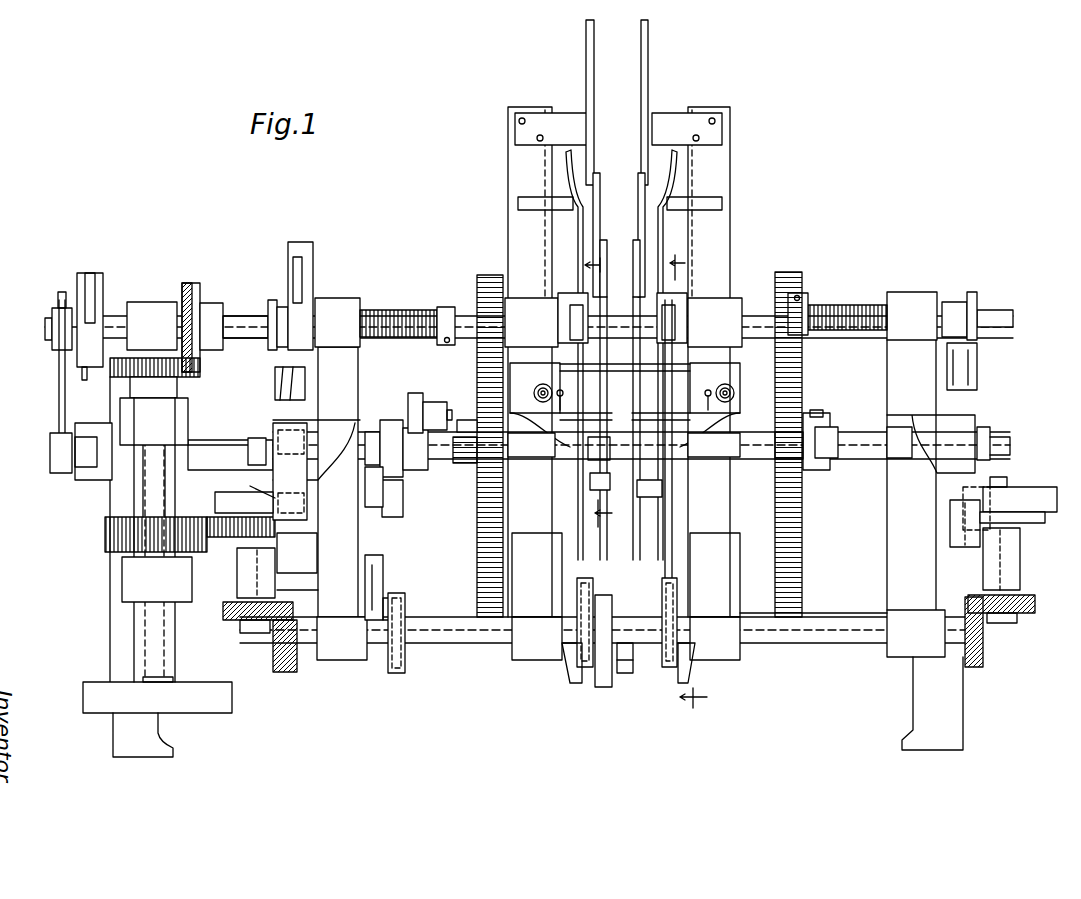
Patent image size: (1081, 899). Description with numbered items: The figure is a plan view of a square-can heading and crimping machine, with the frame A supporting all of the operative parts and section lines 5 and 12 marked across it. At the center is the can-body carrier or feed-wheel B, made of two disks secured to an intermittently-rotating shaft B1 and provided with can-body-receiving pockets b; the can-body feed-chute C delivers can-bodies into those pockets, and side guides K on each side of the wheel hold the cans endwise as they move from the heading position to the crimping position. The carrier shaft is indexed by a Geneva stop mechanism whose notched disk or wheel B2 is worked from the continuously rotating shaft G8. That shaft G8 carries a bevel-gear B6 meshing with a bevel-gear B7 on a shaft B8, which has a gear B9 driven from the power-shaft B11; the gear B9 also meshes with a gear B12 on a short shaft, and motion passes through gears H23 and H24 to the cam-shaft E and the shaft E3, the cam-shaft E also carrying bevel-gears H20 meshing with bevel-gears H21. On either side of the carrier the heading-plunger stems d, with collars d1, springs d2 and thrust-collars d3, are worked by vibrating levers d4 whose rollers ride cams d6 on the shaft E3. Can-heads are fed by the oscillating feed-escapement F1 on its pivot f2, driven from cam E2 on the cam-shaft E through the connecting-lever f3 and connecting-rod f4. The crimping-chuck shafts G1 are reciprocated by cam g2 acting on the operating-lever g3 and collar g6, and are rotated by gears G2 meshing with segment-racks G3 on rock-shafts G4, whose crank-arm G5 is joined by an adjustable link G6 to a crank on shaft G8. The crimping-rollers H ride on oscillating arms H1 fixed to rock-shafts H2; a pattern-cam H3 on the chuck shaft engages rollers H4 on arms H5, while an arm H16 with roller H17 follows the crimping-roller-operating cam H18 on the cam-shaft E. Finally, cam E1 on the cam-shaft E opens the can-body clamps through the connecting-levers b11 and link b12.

The frame A is at (913, 676).
The can-body carrier or feed-wheel B is at (636, 181).
The intermittently-rotating shaft B1 is at (620, 400).
The notched disk or wheel B2 is at (313, 258).
The bevel-gear B6 is at (205, 352).
The bevel-gear B7 is at (195, 368).
The shaft B8 is at (142, 483).
The gear B9 is at (105, 533).
The power-shaft B11 is at (175, 682).
The gear B12 is at (228, 540).
The can-body-receiving pockets b is at (640, 219).
The connecting-levers b11 is at (568, 684).
The link b12 is at (665, 558).
The can-body feed-chute C is at (627, 100).
The stems d is at (469, 313).
The collars d1 is at (445, 307).
The springs d2 is at (372, 310).
The thrust-collars d3 is at (272, 300).
The vibrating levers d4 is at (280, 390).
The cam d6 is at (245, 560).
The cam-shaft E is at (468, 638).
The cam E1 is at (612, 686).
The cam E2 is at (588, 670).
The shaft E3 is at (1005, 478).
The can-head feed-escapement F1 is at (560, 305).
The shaft or pivot f2 is at (558, 389).
The connecting-lever f3 is at (565, 556).
The connecting-rod f4 is at (536, 391).
The shafts of the crimping-chucks G1 is at (252, 440).
The gears G2 is at (805, 459).
The oscillating segment-racks G3 is at (480, 285).
The rock-shafts G4 is at (236, 463).
The crank-arm G5 is at (88, 430).
The adjustable link G6 is at (58, 372).
The shaft G8 is at (233, 313).
The cam g2 is at (218, 504).
The operating-lever g3 is at (1027, 452).
The collar g6 is at (270, 432).
The crimping-rollers H is at (640, 492).
The oscillating arm H1 is at (610, 480).
The rock-shaft H2 is at (612, 446).
The pattern-cam H3 is at (405, 470).
The rollers H4 is at (415, 395).
The arms H5 is at (438, 403).
The arm H16 is at (385, 598).
The roller H17 is at (398, 603).
The crimping-roller-operating cam H18 is at (396, 673).
The bevel-gears H20 is at (283, 672).
The bevel-gears H21 is at (240, 620).
The gear H23 is at (978, 660).
The gear H24 is at (1020, 613).
The side guides K is at (625, 416).
The section line 5 5 is at (688, 481).
The section line 12 12 is at (595, 393).